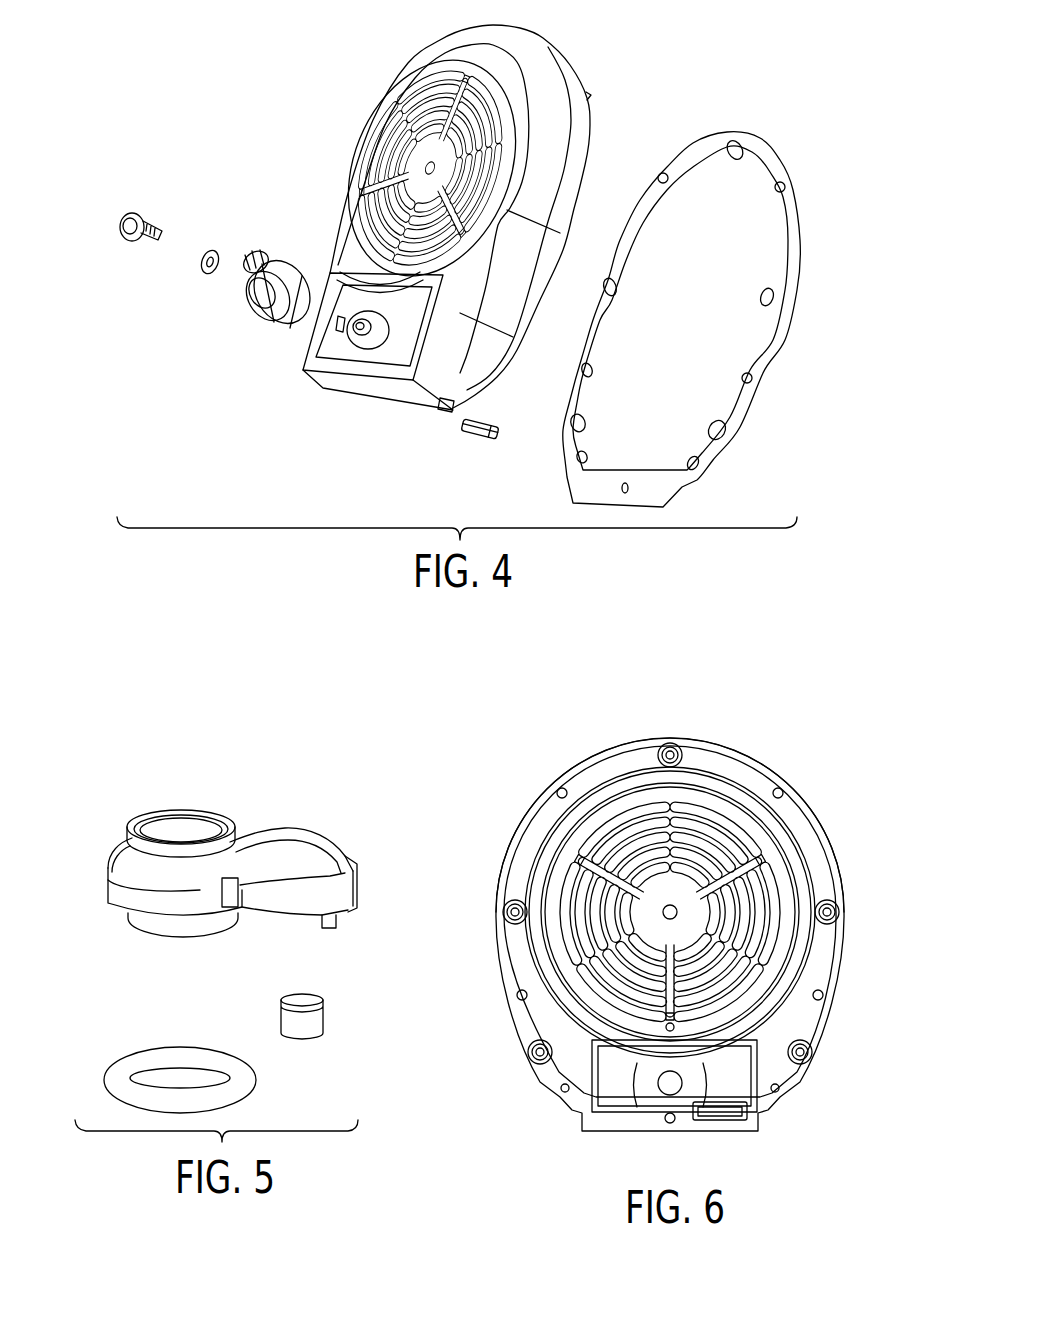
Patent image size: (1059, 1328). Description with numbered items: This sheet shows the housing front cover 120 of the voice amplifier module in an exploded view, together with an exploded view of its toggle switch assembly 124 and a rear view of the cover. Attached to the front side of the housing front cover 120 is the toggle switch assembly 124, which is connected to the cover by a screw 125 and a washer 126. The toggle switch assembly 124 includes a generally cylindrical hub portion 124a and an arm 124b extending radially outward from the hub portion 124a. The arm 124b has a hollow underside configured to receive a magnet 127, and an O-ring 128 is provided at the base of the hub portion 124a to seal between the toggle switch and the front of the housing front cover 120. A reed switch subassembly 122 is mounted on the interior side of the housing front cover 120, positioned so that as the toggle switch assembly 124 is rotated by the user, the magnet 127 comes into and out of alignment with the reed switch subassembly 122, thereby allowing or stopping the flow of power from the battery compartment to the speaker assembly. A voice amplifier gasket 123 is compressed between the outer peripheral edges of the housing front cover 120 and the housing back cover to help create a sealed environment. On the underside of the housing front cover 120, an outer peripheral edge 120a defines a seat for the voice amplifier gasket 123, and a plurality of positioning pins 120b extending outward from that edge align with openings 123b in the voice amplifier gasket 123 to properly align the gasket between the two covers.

In FIG. 4, the housing front cover 120 is at (440, 52).
In FIG. 6, the housing front cover 120 is at (780, 1032).
In FIG. 6, the outer peripheral edge 120a is at (672, 738).
In FIG. 6, the positioning pins 120b is at (560, 788).
In FIG. 4, the reed switch subassembly 122 is at (483, 437).
In FIG. 6, the reed switch subassembly 122 is at (730, 1121).
In FIG. 4, the voice amplifier gasket 123 is at (775, 150).
In FIG. 4, the openings 123b is at (661, 173).
In FIG. 4, the toggle switch assembly 124 is at (260, 243).
In FIG. 5, the hub portion 124a is at (108, 880).
In FIG. 5, the arm 124b is at (352, 886).
In FIG. 4, the screw 125 is at (121, 224).
In FIG. 4, the washer 126 is at (209, 251).
In FIG. 5, the magnet 127 is at (313, 1014).
In FIG. 5, the O-ring 128 is at (112, 1076).